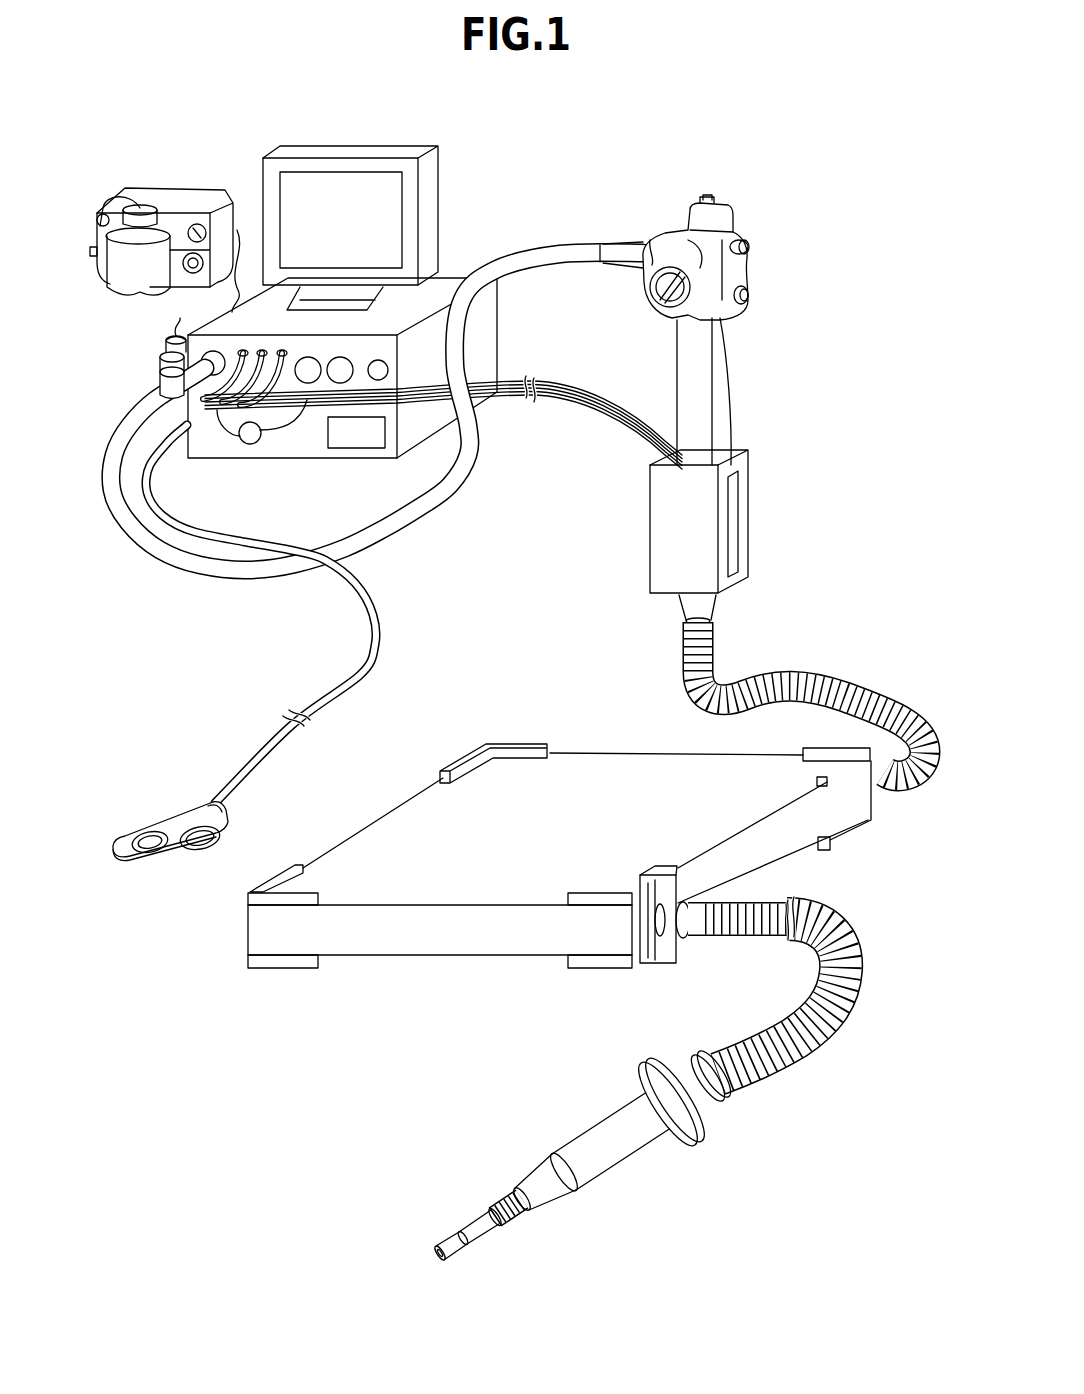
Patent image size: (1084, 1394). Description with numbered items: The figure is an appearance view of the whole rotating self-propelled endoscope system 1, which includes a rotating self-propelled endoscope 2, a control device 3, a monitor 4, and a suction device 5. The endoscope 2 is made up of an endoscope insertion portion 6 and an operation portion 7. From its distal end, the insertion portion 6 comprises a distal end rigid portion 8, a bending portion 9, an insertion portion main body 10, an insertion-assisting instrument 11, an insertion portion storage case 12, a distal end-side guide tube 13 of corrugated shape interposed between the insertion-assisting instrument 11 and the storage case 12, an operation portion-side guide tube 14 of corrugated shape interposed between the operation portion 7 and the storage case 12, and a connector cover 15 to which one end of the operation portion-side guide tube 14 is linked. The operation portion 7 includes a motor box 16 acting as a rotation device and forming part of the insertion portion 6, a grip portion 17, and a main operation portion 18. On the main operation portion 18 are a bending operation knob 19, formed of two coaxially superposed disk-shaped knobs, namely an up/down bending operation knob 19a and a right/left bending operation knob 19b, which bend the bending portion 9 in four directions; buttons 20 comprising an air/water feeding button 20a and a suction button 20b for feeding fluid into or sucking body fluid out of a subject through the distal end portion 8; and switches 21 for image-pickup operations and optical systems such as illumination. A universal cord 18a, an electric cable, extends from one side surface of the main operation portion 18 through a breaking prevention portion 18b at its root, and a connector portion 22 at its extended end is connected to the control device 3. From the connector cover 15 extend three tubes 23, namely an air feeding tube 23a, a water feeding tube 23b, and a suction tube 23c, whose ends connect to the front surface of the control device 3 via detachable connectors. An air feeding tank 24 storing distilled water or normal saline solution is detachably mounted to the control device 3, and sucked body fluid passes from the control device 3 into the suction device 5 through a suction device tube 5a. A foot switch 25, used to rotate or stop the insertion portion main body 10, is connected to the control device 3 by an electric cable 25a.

The rotating self-propelled endoscope system 1 is at (490, 140).
The rotating self-propelled endoscope 2 is at (800, 178).
The control device 3 is at (483, 347).
The monitor 4 is at (432, 205).
The suction device 5 is at (180, 192).
The suction device tube 5a is at (243, 225).
The endoscope insertion portion 6 is at (511, 682).
The operation portion 7 is at (657, 212).
The distal end rigid portion 8 is at (445, 1262).
The bending portion 9 is at (482, 1247).
The insertion portion main body 10 is at (507, 1218).
The insertion-assisting instrument 11 is at (637, 1155).
The insertion portion storage case 12 is at (462, 960).
The distal end-side guide tube 13 is at (820, 1050).
The operation portion-side guide tube 14 is at (876, 702).
The connector cover 15 is at (650, 566).
The motor box 16 is at (740, 452).
The grip portion 17 is at (676, 388).
The main operation portion 18 is at (700, 264).
The universal cord 18a is at (553, 245).
The breaking prevention portion 18b is at (617, 242).
The bending operation knob 19 is at (610, 301).
The up/down bending operation knob 19a is at (648, 282).
The right/left bending operation knob 19b is at (650, 306).
The buttons 20 is at (800, 271).
The air/water feeding button 20a is at (752, 246).
The suction button 20b is at (778, 290).
The switches 21 is at (710, 200).
The connector portion 22 is at (160, 378).
The three tubes 23 is at (442, 452).
The air feeding tube 23a is at (540, 410).
The water feeding tube 23b is at (588, 415).
The suction tube 23c is at (476, 510).
The air feeding tank 24 is at (163, 350).
The foot switch 25 is at (228, 822).
The electric cable 25a is at (344, 655).